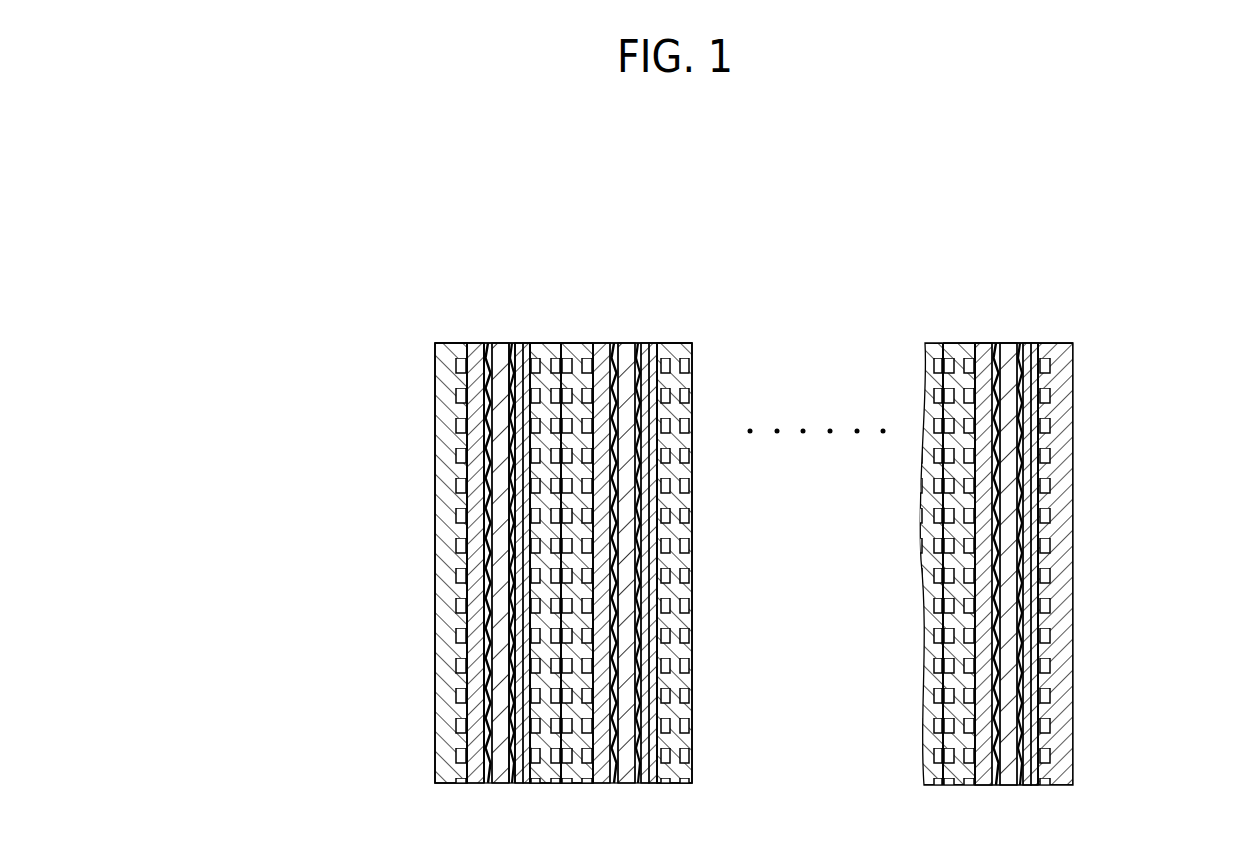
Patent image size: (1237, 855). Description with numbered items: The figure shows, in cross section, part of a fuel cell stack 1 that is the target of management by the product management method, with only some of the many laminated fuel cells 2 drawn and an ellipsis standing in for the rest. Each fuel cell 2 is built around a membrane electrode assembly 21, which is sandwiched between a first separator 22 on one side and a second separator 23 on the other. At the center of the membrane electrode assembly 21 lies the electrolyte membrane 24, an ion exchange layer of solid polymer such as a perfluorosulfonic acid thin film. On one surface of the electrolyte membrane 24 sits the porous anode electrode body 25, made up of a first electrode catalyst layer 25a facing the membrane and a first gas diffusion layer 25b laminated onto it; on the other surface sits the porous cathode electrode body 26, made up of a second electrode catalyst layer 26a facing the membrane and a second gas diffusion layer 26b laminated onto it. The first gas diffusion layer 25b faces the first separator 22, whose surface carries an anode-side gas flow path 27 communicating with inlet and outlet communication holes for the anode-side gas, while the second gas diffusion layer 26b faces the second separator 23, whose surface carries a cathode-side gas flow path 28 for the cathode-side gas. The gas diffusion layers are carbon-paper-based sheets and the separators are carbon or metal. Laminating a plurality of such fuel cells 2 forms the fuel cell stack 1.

The fuel cell stack 1 is at (407, 200).
The fuel cell 2 is at (508, 326).
The membrane electrode assembly 21 is at (287, 505).
The first separator 22 is at (468, 470).
The second separator 23 is at (550, 728).
The electrolyte membrane 24 is at (500, 595).
The anode electrode body 25 is at (340, 487).
The first electrode catalyst layer 25a is at (478, 545).
The first gas diffusion layer 25b is at (477, 495).
The cathode electrode body 26 is at (340, 620).
The second electrode catalyst layer 26a is at (510, 638).
The second gas diffusion layer 26b is at (517, 688).
The anode-side gas flow path 27 is at (458, 431).
The cathode-side gas flow path 28 is at (1048, 520).